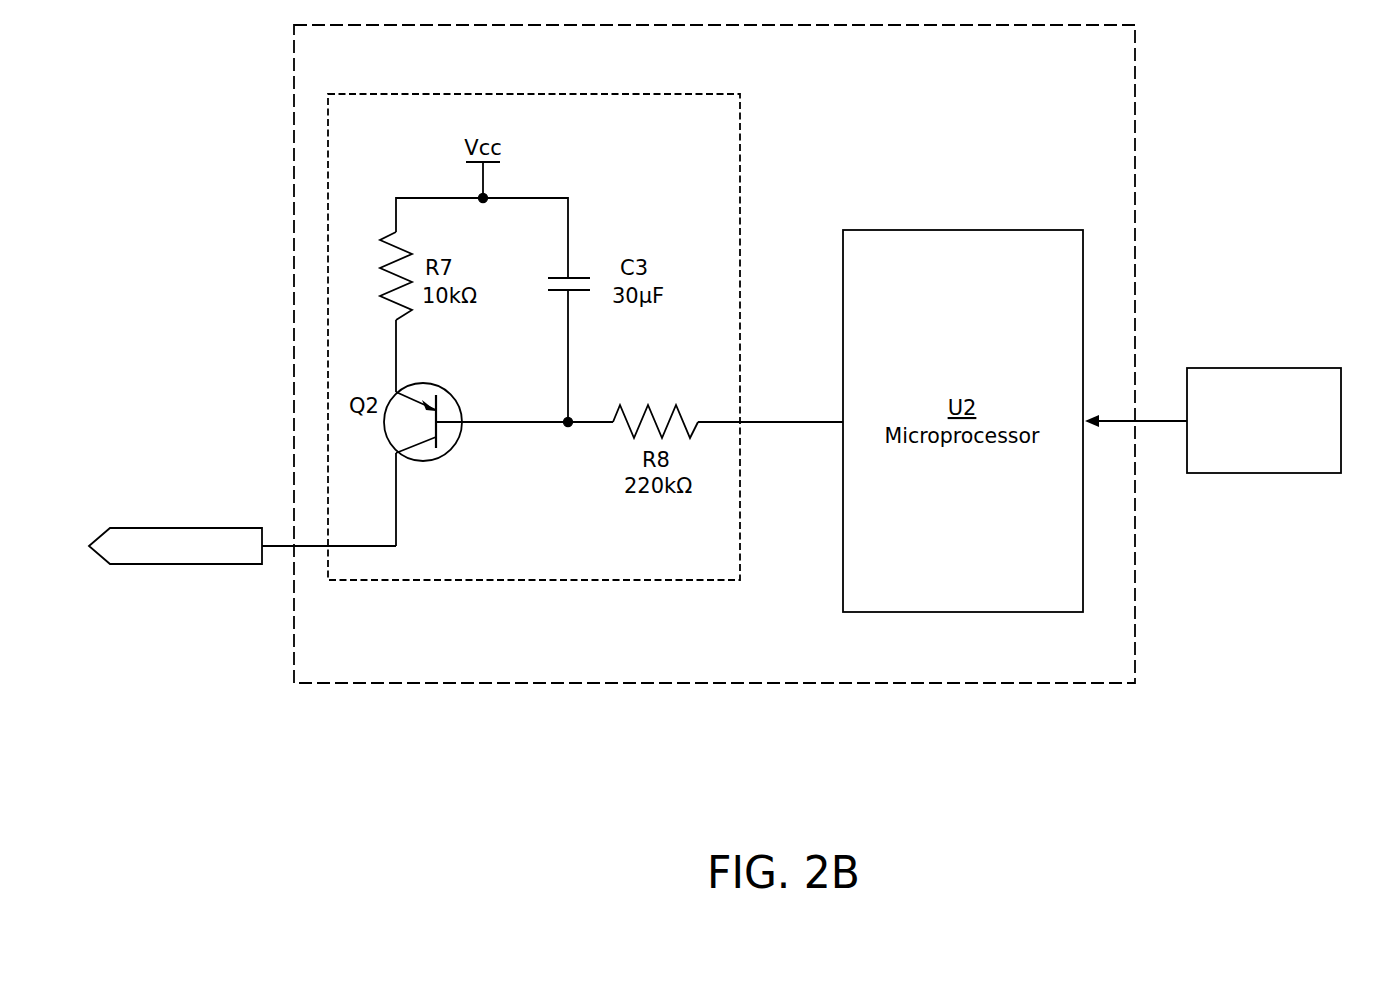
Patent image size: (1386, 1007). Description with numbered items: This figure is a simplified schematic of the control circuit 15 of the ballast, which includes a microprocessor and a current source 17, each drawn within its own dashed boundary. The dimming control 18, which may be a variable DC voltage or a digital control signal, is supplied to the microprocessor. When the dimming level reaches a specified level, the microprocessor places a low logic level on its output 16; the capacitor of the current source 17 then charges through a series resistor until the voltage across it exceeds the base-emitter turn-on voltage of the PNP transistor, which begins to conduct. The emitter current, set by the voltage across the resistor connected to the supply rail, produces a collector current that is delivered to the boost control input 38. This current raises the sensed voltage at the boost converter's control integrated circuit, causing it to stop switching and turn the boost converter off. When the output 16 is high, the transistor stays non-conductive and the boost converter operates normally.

The control circuit 15 is at (536, 684).
The output 16 is at (843, 422).
The current source 17 is at (740, 162).
The dimming control 18 is at (1270, 455).
The boost control input 38 is at (200, 528).